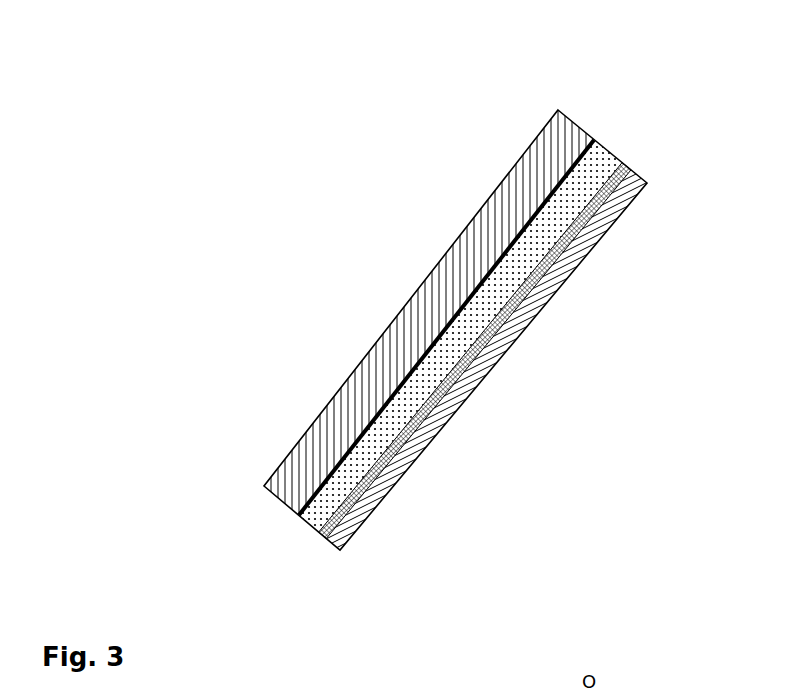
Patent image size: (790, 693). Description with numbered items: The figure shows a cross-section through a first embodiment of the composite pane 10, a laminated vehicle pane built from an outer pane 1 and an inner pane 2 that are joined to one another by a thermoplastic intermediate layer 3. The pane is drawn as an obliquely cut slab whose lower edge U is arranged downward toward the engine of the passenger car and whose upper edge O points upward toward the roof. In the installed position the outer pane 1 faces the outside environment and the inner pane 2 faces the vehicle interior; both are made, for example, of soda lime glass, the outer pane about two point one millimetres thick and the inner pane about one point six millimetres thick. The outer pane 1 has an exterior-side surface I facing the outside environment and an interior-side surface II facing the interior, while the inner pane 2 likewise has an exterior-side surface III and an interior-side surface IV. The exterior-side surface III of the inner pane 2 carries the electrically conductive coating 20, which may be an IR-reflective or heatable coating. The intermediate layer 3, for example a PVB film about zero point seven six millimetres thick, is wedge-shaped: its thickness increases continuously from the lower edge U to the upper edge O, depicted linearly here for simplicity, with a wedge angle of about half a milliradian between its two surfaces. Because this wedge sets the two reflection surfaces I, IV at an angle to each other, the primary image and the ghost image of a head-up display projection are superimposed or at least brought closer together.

The composite pane 10 is at (332, 240).
The outer pane 1 is at (520, 217).
The inner pane 2 is at (602, 228).
The thermoplastic intermediate layer 3 is at (601, 169).
The electrically conductive coating 20 is at (610, 190).
The upper edge O is at (586, 128).
The lower edge U is at (297, 518).
The exterior-side surface of the outer pane I is at (322, 415).
The interior-side surface of the outer pane II is at (318, 492).
The exterior-side surface of the inner pane III is at (452, 392).
The interior-side surface of the inner pane IV is at (430, 450).